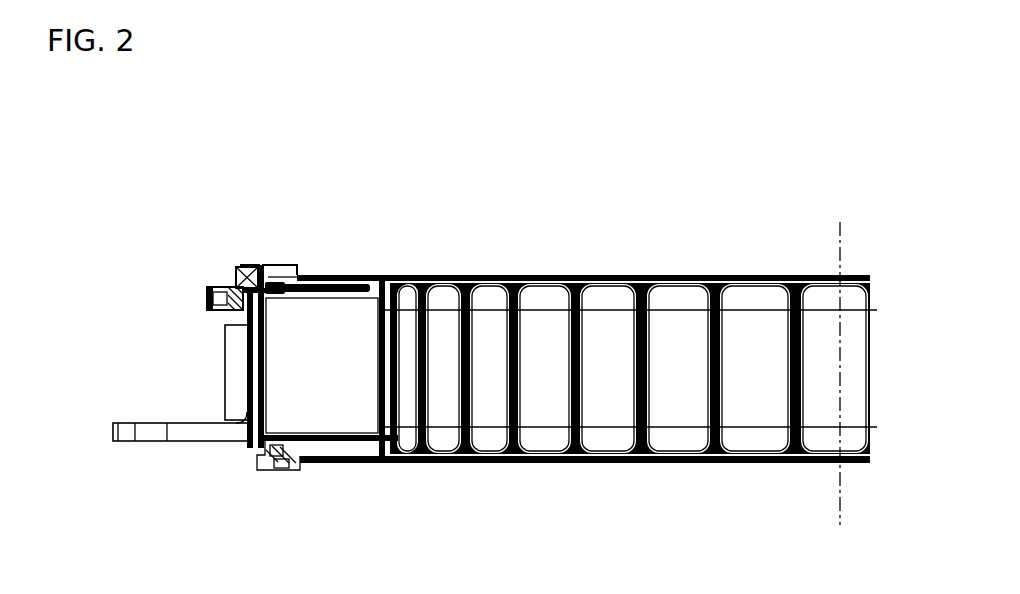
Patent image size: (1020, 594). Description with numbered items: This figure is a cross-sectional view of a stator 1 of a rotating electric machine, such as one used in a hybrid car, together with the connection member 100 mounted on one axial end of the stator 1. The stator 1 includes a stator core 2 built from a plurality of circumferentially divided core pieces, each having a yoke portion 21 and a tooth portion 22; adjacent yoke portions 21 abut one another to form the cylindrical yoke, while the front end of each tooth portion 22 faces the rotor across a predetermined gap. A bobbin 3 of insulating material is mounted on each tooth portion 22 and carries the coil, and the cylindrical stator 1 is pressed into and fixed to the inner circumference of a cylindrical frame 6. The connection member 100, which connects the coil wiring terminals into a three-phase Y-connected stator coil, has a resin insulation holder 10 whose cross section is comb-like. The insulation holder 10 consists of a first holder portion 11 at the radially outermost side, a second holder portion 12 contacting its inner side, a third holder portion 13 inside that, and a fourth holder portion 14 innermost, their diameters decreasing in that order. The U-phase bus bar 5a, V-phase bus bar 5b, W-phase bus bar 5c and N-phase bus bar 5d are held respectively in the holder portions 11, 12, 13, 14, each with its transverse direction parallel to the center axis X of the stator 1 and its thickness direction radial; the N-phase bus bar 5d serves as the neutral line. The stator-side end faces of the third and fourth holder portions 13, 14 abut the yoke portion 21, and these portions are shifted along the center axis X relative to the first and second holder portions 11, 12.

The connection member 100 is at (188, 178).
The stator 1 is at (482, 274).
The stator core 2 is at (321, 413).
The bobbin 3 is at (495, 442).
The U-phase bus bar 5a is at (213, 306).
The V-phase bus bar 5b is at (223, 310).
The W-phase bus bar 5c is at (243, 268).
The N-phase bus bar 5d is at (262, 273).
The frame 6 is at (236, 378).
The insulation holder 10 is at (237, 276).
The first holder portion 11 is at (206, 300).
The second holder portion 12 is at (212, 287).
The third holder portion 13 is at (235, 282).
The fourth holder portion 14 is at (247, 265).
The yoke portion 21 is at (278, 412).
The tooth portion 22 is at (377, 413).
The center axis X is at (838, 240).